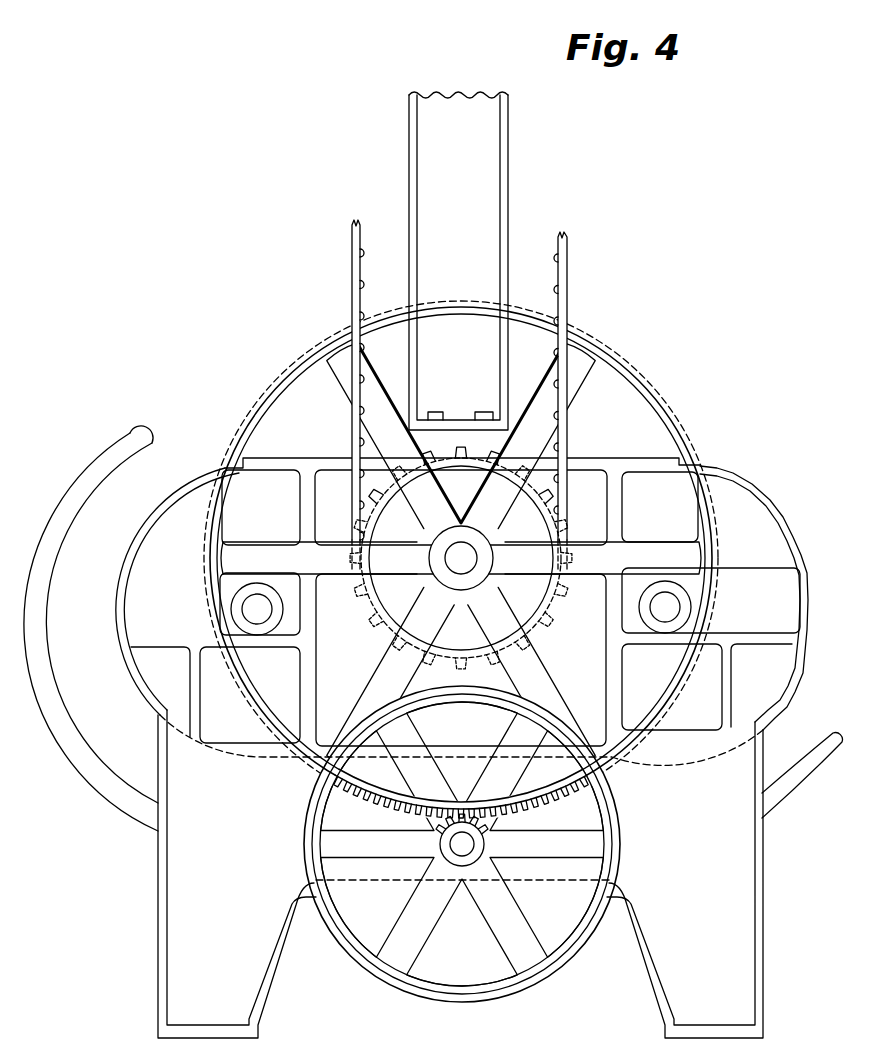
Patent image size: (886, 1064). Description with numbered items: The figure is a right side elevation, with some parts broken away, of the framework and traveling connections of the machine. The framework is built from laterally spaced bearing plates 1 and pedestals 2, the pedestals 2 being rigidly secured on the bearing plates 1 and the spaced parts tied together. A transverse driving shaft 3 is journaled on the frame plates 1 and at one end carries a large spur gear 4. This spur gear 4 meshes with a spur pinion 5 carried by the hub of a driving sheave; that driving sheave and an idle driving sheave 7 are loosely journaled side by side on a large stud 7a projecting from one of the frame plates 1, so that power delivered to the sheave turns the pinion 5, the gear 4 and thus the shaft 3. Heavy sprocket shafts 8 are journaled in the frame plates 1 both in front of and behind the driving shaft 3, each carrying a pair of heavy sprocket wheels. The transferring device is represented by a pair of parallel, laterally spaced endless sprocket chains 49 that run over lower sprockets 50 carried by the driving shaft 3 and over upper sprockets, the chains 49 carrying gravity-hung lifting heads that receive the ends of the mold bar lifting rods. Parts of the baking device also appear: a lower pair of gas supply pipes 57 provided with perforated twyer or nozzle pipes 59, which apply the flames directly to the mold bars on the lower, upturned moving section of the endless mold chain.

The bearing plates 1 is at (740, 507).
The pedestals 2 is at (490, 208).
The driving shaft 3 is at (462, 557).
The spur gear 4 is at (310, 767).
The spur pinion 5 is at (440, 832).
The idle driving sheave 7 is at (390, 978).
The stud 7a is at (462, 848).
The sprocket shafts 8 is at (248, 609).
The endless sprocket chains 49 is at (565, 305).
The lower sprockets 50 is at (528, 490).
The lower gas supply pipes 57 is at (805, 777).
The nozzle pipes 59 is at (77, 750).